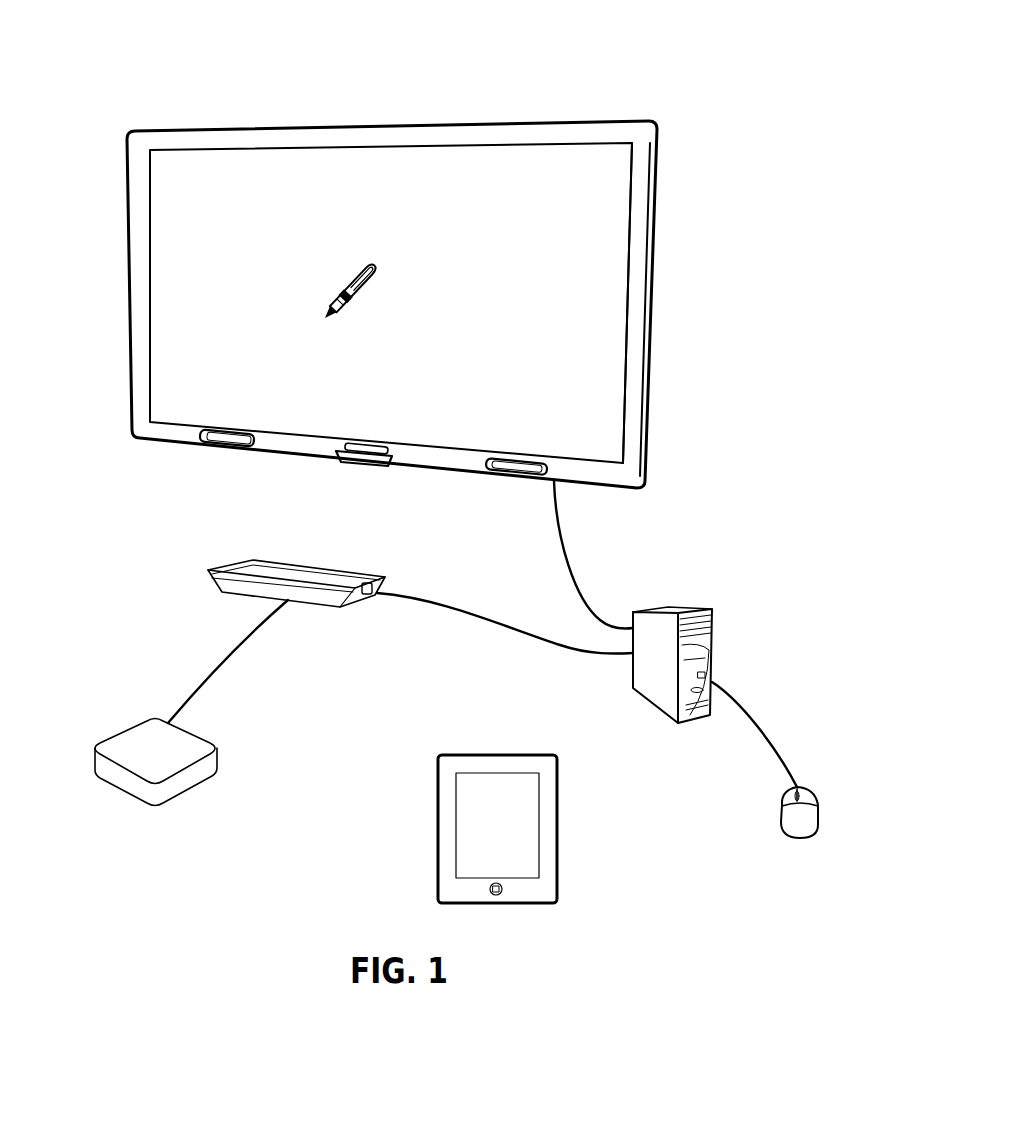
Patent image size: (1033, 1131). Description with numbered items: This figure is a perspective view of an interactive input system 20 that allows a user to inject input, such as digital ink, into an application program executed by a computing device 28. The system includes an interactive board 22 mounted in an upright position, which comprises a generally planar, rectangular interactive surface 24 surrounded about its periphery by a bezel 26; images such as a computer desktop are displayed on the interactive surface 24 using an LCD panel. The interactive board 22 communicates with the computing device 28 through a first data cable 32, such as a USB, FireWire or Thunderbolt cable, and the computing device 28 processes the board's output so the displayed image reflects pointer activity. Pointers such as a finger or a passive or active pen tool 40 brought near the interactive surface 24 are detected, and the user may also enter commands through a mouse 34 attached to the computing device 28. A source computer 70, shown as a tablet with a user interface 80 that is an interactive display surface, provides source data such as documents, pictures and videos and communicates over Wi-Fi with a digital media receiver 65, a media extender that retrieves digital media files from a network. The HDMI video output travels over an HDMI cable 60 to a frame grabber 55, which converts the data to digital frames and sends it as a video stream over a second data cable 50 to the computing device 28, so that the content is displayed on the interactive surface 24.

The interactive input system 20 is at (674, 93).
The interactive board 22 is at (665, 239).
The interactive surface 24 is at (589, 318).
The bezel 26 is at (633, 386).
The computing device 28 is at (710, 632).
The first data cable 32 is at (578, 590).
The mouse 34 is at (782, 810).
The pen tool 40 is at (360, 282).
The second data cable 50 is at (420, 601).
The frame grabber 55 is at (232, 566).
The HDMI cable 60 is at (218, 668).
The digital media receiver 65 is at (94, 760).
The source computer 70 is at (438, 800).
The user interface 80 is at (514, 821).